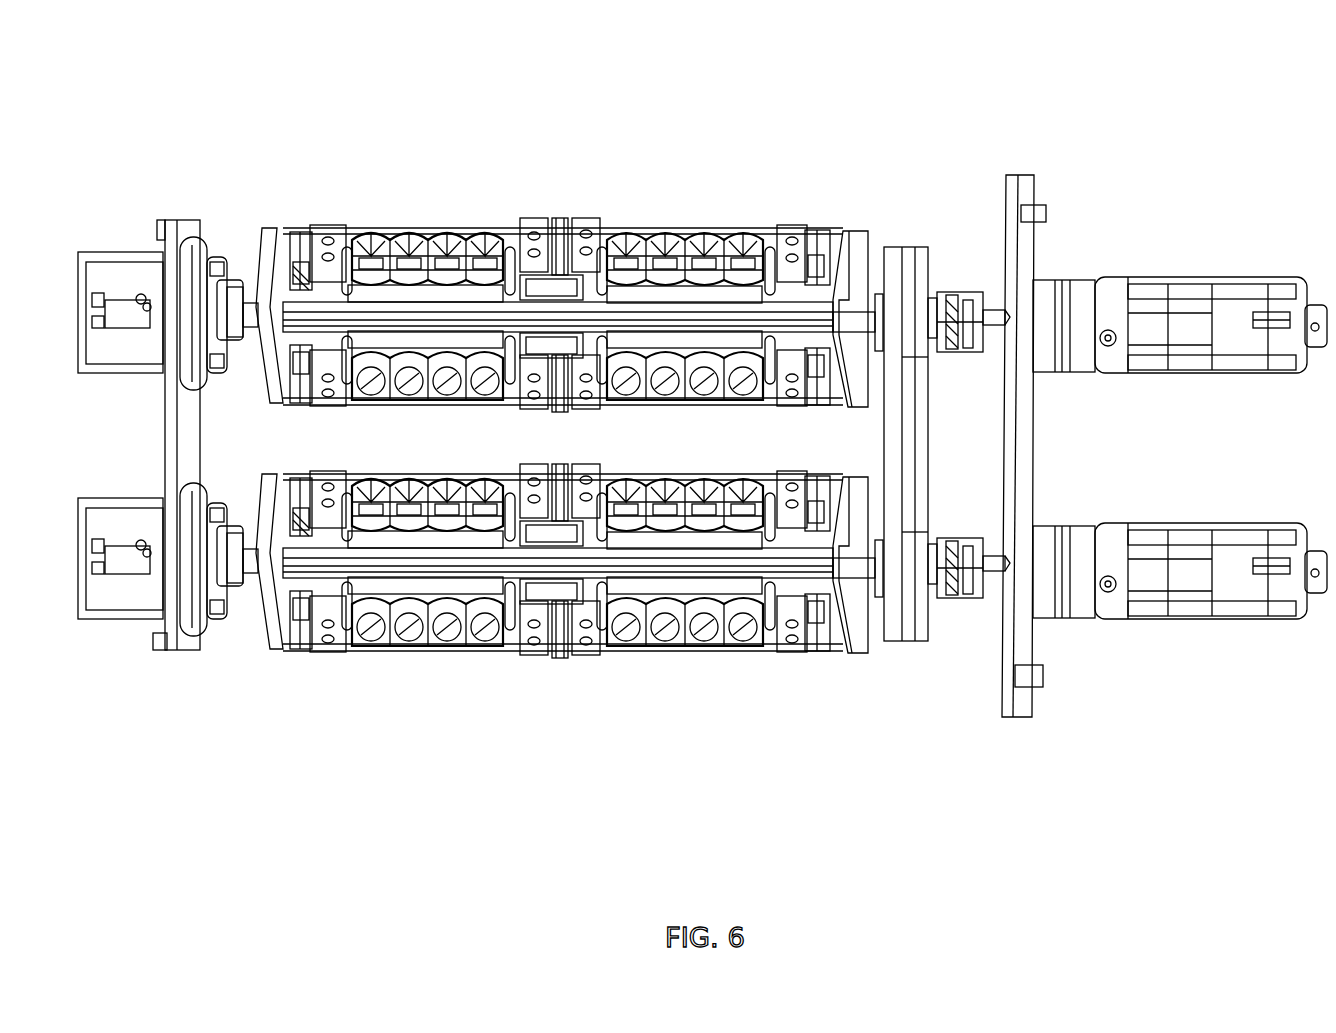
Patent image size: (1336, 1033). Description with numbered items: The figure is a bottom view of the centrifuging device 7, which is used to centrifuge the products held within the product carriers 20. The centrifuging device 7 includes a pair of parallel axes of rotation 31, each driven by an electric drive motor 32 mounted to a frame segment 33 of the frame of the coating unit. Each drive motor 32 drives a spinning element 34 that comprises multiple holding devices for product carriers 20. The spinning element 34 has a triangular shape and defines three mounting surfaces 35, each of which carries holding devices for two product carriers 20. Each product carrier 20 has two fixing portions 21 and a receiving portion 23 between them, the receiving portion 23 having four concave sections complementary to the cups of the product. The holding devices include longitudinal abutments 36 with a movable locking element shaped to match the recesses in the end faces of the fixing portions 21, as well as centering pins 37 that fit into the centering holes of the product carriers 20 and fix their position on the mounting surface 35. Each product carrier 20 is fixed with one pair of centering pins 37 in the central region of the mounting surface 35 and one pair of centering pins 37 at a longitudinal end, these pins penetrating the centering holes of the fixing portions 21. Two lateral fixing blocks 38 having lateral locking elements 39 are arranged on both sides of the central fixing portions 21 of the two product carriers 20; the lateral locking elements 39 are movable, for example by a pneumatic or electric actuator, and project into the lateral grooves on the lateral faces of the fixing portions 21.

The centrifuging device 7 is at (920, 80).
The product carrier 20 is at (385, 242).
The fixing portion 21 is at (346, 252).
The receiving portion 23 is at (432, 235).
The axis of rotation 31 is at (993, 312).
The electric drive motor 32 is at (1188, 300).
The frame segment 33 is at (1028, 432).
The spinning element 34 is at (262, 255).
The mounting surface 35 is at (285, 260).
The longitudinal abutment 36 is at (300, 235).
The centering pin 37 is at (325, 240).
The lateral fixing block 38 is at (565, 240).
The lateral locking element 39 is at (583, 238).